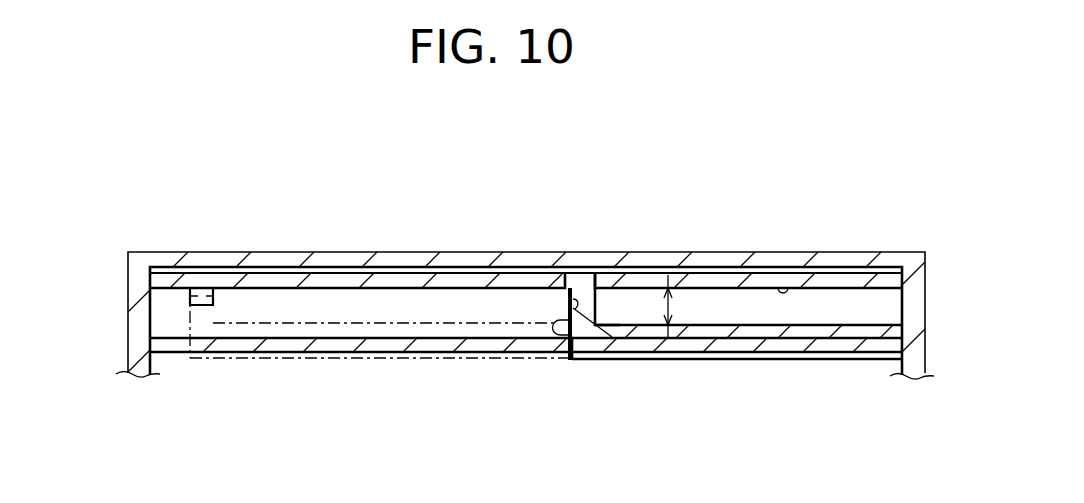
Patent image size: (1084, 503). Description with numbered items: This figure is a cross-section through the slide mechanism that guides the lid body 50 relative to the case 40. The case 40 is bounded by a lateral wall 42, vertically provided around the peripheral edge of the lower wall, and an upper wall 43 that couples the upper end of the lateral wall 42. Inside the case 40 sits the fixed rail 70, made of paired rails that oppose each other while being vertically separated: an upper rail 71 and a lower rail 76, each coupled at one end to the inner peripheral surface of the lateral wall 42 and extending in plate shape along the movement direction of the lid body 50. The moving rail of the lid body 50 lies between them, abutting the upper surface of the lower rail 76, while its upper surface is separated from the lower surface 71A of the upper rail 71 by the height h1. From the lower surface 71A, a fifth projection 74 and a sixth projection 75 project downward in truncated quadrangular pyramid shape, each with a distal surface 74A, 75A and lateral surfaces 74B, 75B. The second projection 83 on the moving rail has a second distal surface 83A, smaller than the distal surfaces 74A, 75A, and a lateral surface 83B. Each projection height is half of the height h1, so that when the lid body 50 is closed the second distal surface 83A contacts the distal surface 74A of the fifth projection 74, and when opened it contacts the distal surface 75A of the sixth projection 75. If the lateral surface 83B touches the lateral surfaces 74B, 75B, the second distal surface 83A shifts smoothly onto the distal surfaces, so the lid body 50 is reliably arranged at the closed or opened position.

The case 40 is at (163, 193).
The lateral wall 42 is at (128, 280).
The upper wall 43 is at (426, 259).
The lid body 50 is at (737, 360).
The fixed rail 70 is at (526, 302).
The upper rail 71 is at (718, 282).
The lower surface of the upper rail 71A is at (786, 291).
The fifth projection 74 is at (570, 290).
The distal surface of the fifth projection 74A is at (597, 312).
The lateral surface of the fifth projection 74B is at (596, 290).
The sixth projection 75 is at (190, 298).
The distal surface of the sixth projection 75A is at (215, 300).
The lateral surface of the sixth projection 75B is at (216, 290).
The lower rail 76 is at (330, 353).
The second projection 83 is at (562, 340).
The second distal surface 83A is at (570, 303).
The lateral surface of the second projection 83B is at (617, 326).
The height h1 is at (673, 311).